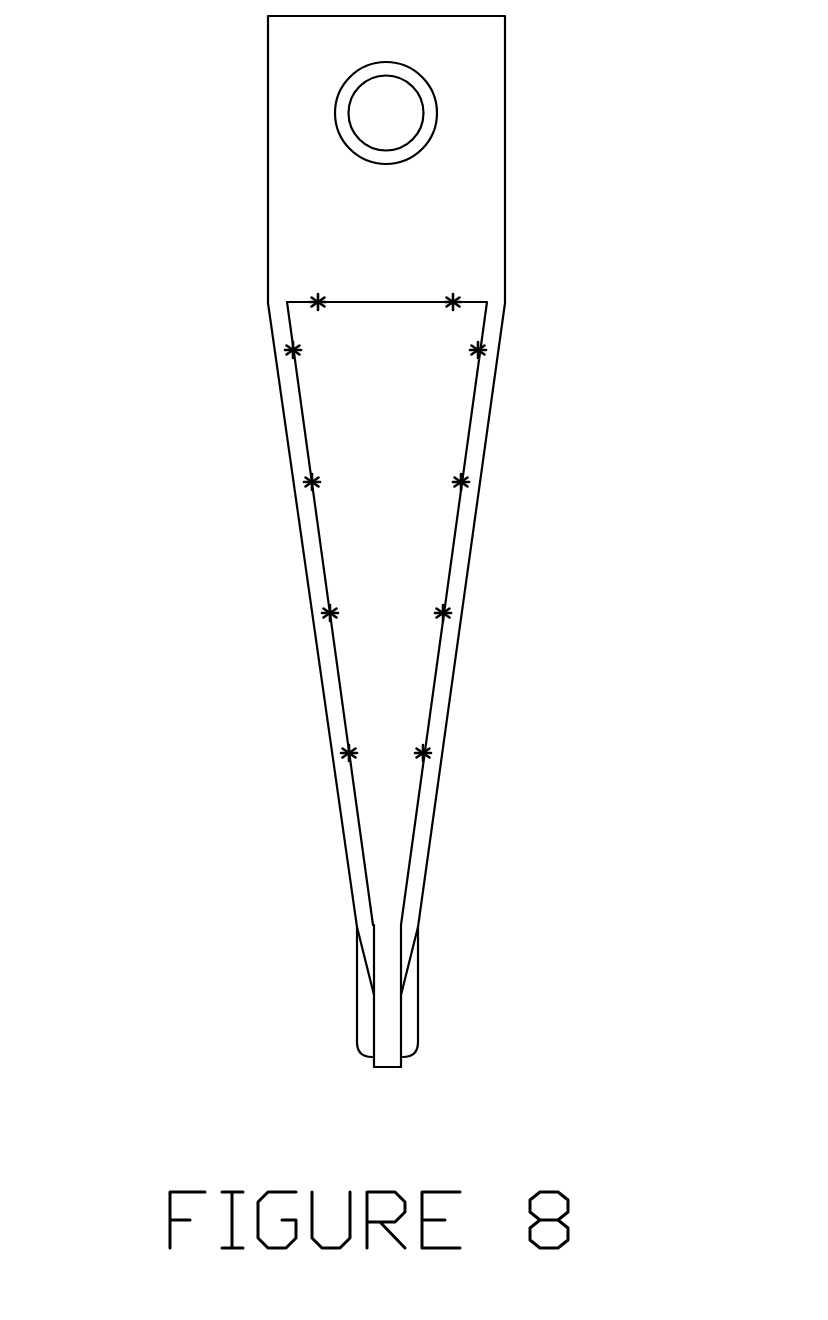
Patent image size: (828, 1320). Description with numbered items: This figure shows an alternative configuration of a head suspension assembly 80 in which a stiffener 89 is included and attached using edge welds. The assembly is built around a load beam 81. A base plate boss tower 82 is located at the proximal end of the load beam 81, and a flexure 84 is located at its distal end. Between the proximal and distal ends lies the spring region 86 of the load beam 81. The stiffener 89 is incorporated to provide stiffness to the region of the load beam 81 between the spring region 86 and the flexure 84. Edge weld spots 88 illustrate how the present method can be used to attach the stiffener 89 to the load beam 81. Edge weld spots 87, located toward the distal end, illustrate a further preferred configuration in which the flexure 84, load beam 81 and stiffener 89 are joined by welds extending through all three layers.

The head suspension assembly 80 is at (354, 541).
The load beam 81 is at (256, 316).
The base plate boss tower 82 is at (435, 122).
The flexure 84 is at (343, 1010).
The spring region 86 is at (268, 236).
The edge weld spots 87 is at (349, 753).
The edge weld spots 88 is at (461, 482).
The stiffener 89 is at (427, 538).